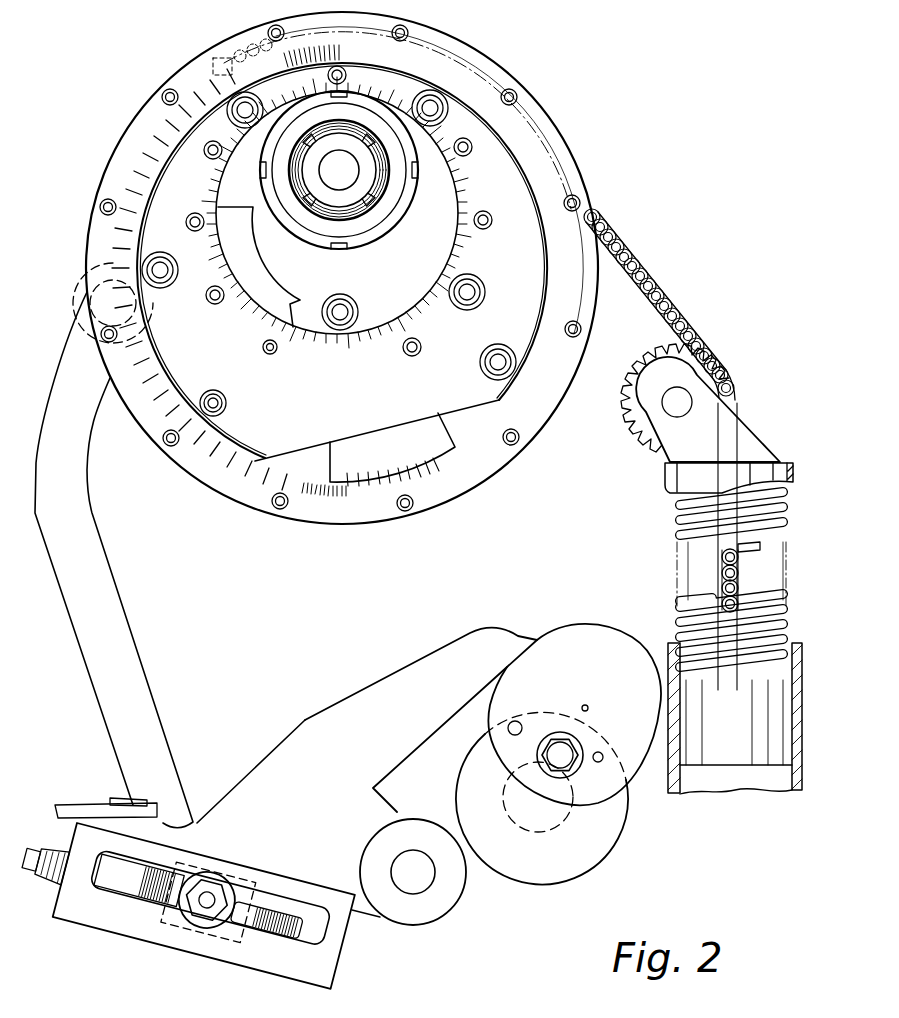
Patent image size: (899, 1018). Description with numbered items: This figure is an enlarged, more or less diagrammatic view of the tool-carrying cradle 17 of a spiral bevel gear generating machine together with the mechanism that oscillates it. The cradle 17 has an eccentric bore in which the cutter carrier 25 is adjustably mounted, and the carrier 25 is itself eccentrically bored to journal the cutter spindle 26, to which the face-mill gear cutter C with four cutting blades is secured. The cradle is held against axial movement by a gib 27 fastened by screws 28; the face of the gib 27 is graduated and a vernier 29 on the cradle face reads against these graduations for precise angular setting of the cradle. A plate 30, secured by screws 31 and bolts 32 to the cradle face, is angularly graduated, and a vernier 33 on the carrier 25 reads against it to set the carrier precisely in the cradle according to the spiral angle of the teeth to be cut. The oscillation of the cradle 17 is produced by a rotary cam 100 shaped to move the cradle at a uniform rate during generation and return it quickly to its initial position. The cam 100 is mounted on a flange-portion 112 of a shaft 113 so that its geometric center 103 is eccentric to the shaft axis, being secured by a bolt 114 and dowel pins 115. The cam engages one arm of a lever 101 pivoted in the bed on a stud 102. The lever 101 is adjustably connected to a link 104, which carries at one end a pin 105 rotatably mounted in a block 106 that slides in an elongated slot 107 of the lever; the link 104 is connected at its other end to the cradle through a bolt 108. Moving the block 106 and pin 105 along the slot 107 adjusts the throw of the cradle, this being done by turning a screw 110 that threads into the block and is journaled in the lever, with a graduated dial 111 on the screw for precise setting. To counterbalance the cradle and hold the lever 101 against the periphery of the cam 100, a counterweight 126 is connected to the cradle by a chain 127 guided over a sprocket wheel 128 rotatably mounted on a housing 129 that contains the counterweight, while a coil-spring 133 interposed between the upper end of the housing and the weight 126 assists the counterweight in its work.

The cradle 17 is at (473, 424).
The cutter carrier 25 is at (459, 200).
The cutter spindle 26 is at (340, 165).
The gib 27 is at (535, 419).
The screws 28 is at (407, 513).
The vernier 29 is at (380, 445).
The plate 30 is at (329, 239).
The screws 31 is at (269, 352).
The bolts 32 is at (224, 404).
The vernier 33 is at (268, 283).
The face-mill gear cutter C is at (386, 183).
The rotary cam 100 is at (577, 637).
The lever 101 is at (388, 680).
The stud 102 is at (413, 878).
The geometric center of the cam 103 is at (584, 705).
The link 104 is at (135, 692).
The pin 105 is at (212, 896).
The block 106 is at (246, 904).
The elongated slot 107 is at (310, 944).
The bolt 108 is at (110, 300).
The screw 110 is at (141, 896).
The graduated dial 111 is at (50, 872).
The flange-portion 112 is at (543, 873).
The shaft 113 is at (522, 831).
The bolt 114 is at (577, 745).
The dowel pins 115 is at (604, 757).
The counterweight 126 is at (716, 755).
The chain 127 is at (634, 258).
The sprocket wheel 128 is at (638, 422).
The housing 129 is at (677, 483).
The coil-spring 133 is at (680, 539).